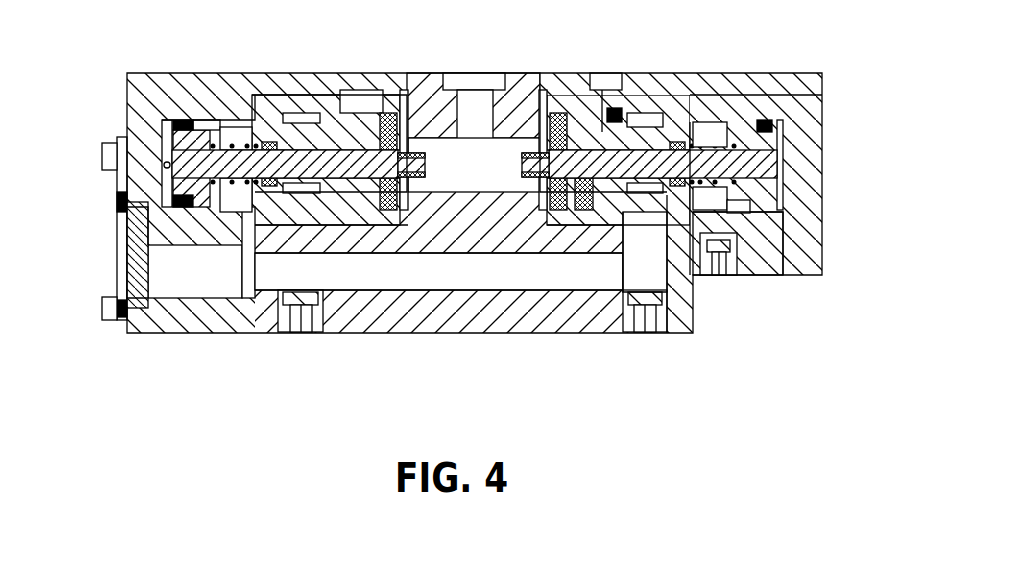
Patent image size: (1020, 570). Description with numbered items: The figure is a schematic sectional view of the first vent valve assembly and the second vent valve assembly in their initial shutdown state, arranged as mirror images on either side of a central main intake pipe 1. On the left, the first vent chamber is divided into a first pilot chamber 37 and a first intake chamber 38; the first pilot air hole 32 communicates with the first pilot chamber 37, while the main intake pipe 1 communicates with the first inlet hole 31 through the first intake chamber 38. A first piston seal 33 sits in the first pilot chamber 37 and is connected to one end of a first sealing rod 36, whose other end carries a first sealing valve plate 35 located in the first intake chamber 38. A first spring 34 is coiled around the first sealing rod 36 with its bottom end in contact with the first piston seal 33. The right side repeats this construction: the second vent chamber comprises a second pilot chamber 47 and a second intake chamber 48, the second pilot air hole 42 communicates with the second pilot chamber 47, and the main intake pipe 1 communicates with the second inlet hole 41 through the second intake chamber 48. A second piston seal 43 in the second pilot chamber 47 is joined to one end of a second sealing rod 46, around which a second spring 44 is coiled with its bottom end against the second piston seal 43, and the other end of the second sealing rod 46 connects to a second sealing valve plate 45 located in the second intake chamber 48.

The main intake pipe 1 is at (478, 105).
The first inlet hole 31 is at (362, 92).
The first pilot air hole 32 is at (158, 163).
The first piston seal 33 is at (193, 197).
The first spring 34 is at (238, 203).
The first sealing valve plate 35 is at (367, 220).
The first sealing rod 36 is at (300, 210).
The first pilot chamber 37 is at (228, 122).
The first intake chamber 38 is at (398, 115).
The second inlet hole 41 is at (598, 90).
The second pilot air hole 42 is at (787, 190).
The second piston seal 43 is at (760, 197).
The second spring 44 is at (708, 197).
The second sealing valve plate 45 is at (583, 222).
The second sealing rod 46 is at (653, 177).
The second pilot chamber 47 is at (720, 123).
The second intake chamber 48 is at (553, 110).